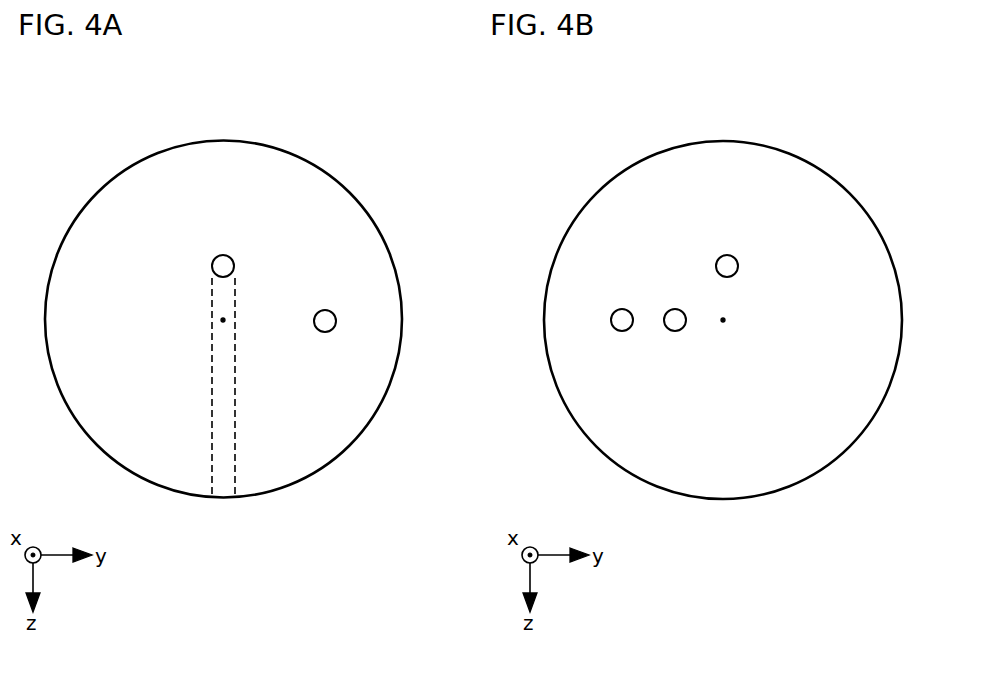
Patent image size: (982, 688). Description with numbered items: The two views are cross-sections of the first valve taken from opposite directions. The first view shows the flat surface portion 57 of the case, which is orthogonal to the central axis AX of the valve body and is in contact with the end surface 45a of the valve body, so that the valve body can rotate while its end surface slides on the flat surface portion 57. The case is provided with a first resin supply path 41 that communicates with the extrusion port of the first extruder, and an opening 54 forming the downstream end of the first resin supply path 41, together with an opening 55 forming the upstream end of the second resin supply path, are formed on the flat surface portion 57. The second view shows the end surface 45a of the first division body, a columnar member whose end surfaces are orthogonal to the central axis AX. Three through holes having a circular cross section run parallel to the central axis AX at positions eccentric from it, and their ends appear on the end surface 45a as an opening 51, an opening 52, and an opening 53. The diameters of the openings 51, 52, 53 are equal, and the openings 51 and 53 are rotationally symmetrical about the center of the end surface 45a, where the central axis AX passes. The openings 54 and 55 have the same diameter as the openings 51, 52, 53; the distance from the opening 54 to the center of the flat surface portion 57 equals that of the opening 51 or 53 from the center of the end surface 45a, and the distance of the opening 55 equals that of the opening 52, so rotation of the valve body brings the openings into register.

In FIG. 4A, the flat surface portion 57 is at (316, 190).
In FIG. 4A, the opening 54 is at (212, 266).
In FIG. 4A, the opening 55 is at (336, 321).
In FIG. 4A, the first resin supply path 41 is at (212, 401).
In FIG. 4A, the central axis AX is at (226, 319).
In FIG. 4B, the central axis AX is at (726, 319).
In FIG. 4B, the end surface 45a is at (770, 173).
In FIG. 4B, the opening 51 is at (738, 265).
In FIG. 4B, the opening 52 is at (611, 320).
In FIG. 4B, the opening 53 is at (675, 332).